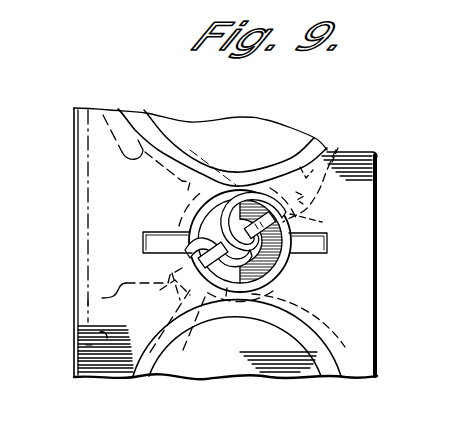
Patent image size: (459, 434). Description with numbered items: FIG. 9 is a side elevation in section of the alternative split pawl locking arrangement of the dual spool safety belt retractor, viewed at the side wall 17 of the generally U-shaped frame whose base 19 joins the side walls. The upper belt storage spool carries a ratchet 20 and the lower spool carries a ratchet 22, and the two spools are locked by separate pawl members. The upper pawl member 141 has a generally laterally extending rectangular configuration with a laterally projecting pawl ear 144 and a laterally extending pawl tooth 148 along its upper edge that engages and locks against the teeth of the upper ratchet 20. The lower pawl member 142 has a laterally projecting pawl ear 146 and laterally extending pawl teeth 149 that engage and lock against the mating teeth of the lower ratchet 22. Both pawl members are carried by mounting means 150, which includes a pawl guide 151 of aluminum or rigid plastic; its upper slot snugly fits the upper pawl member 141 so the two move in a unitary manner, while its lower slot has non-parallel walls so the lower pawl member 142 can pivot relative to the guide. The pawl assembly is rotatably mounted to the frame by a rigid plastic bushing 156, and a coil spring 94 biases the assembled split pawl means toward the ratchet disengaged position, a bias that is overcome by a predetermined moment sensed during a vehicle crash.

The side wall 17 is at (107, 336).
The base 19 is at (75, 342).
The ratchet 20 is at (102, 110).
The ratchet 22 is at (341, 350).
The coil spring 94 is at (300, 253).
The upper pawl member 141 is at (325, 220).
The lower pawl member 142 is at (237, 338).
The pawl ear 144 is at (240, 196).
The pawl ear 146 is at (227, 294).
The pawl tooth 148 is at (340, 142).
The pawl teeth 149 is at (102, 298).
The mounting means 150 is at (161, 193).
The pawl guide 151 is at (143, 231).
The bushing 156 is at (197, 214).